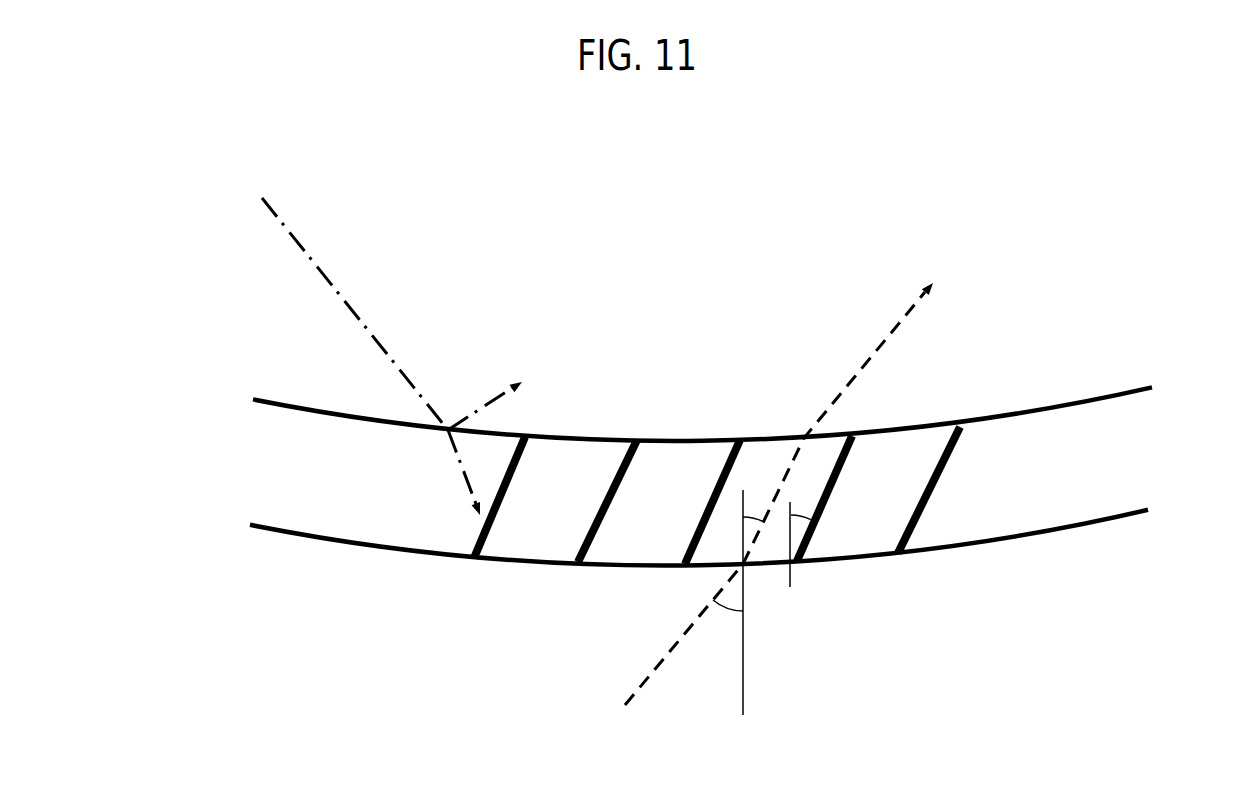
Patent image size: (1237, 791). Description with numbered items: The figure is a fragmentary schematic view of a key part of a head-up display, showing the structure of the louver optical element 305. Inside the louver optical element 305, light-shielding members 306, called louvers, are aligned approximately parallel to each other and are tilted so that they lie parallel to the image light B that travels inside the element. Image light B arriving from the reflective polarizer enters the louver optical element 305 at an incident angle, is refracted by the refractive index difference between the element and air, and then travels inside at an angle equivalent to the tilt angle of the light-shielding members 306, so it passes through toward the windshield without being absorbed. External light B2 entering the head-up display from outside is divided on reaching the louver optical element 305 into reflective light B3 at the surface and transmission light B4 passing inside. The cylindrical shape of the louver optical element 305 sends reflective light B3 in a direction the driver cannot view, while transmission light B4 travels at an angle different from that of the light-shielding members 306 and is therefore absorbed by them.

The louver optical element 305 is at (333, 543).
The light-shielding member 306 is at (917, 527).
The image light B is at (790, 488).
The external light B2 is at (347, 295).
The reflective light B3 is at (505, 399).
The transmission light B4 is at (458, 478).